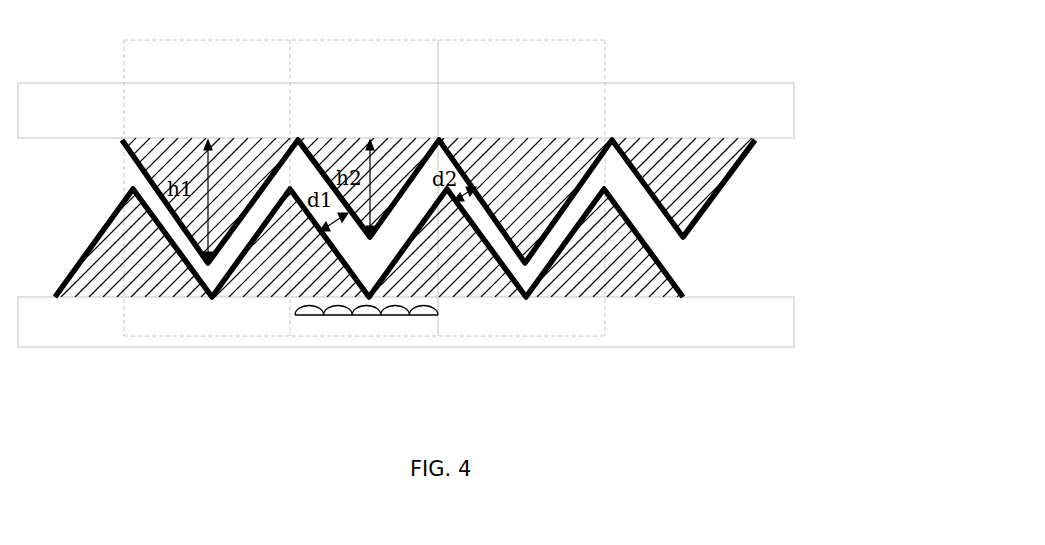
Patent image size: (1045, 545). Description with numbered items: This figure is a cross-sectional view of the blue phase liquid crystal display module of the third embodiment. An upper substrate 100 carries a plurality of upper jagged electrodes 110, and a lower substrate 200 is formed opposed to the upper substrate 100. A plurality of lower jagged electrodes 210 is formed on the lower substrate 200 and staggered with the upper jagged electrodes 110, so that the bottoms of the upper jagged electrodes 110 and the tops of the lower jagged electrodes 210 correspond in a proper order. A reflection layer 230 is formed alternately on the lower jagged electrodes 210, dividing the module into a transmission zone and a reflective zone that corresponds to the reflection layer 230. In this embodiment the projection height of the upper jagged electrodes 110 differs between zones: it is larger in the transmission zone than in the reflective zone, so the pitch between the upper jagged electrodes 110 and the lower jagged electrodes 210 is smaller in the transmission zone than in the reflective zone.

The upper substrate 100 is at (697, 62).
The upper jagged electrodes 110 is at (717, 203).
The lower substrate 200 is at (706, 362).
The lower jagged electrodes 210 is at (675, 270).
The reflection layer 230 is at (365, 312).